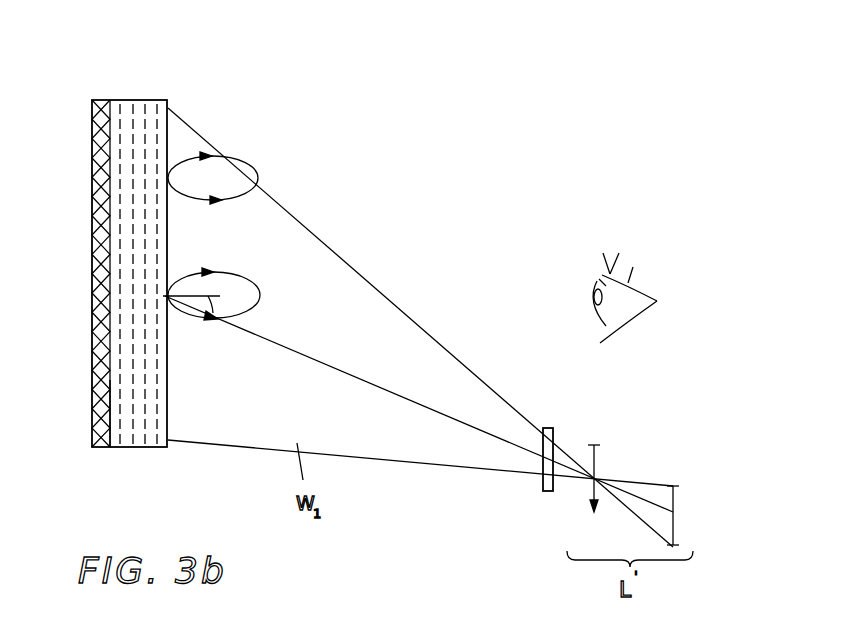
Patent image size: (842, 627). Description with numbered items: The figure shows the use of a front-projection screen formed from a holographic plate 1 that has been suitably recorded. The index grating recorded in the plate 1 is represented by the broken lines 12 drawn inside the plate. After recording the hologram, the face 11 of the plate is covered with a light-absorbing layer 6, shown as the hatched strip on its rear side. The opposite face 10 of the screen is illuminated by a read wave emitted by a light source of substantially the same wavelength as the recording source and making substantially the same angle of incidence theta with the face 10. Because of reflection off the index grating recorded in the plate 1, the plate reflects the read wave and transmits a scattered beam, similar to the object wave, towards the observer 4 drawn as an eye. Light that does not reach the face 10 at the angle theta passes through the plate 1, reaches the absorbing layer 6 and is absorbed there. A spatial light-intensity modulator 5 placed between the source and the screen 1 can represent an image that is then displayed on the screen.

The holographic plate 1 is at (134, 100).
The observer 4 is at (603, 276).
The lens 5 is at (548, 428).
The light-absorbing layer 6 is at (106, 430).
The face of the screen 10 is at (173, 130).
The face 11 is at (108, 134).
The broken lines representing index grating 12 is at (131, 437).